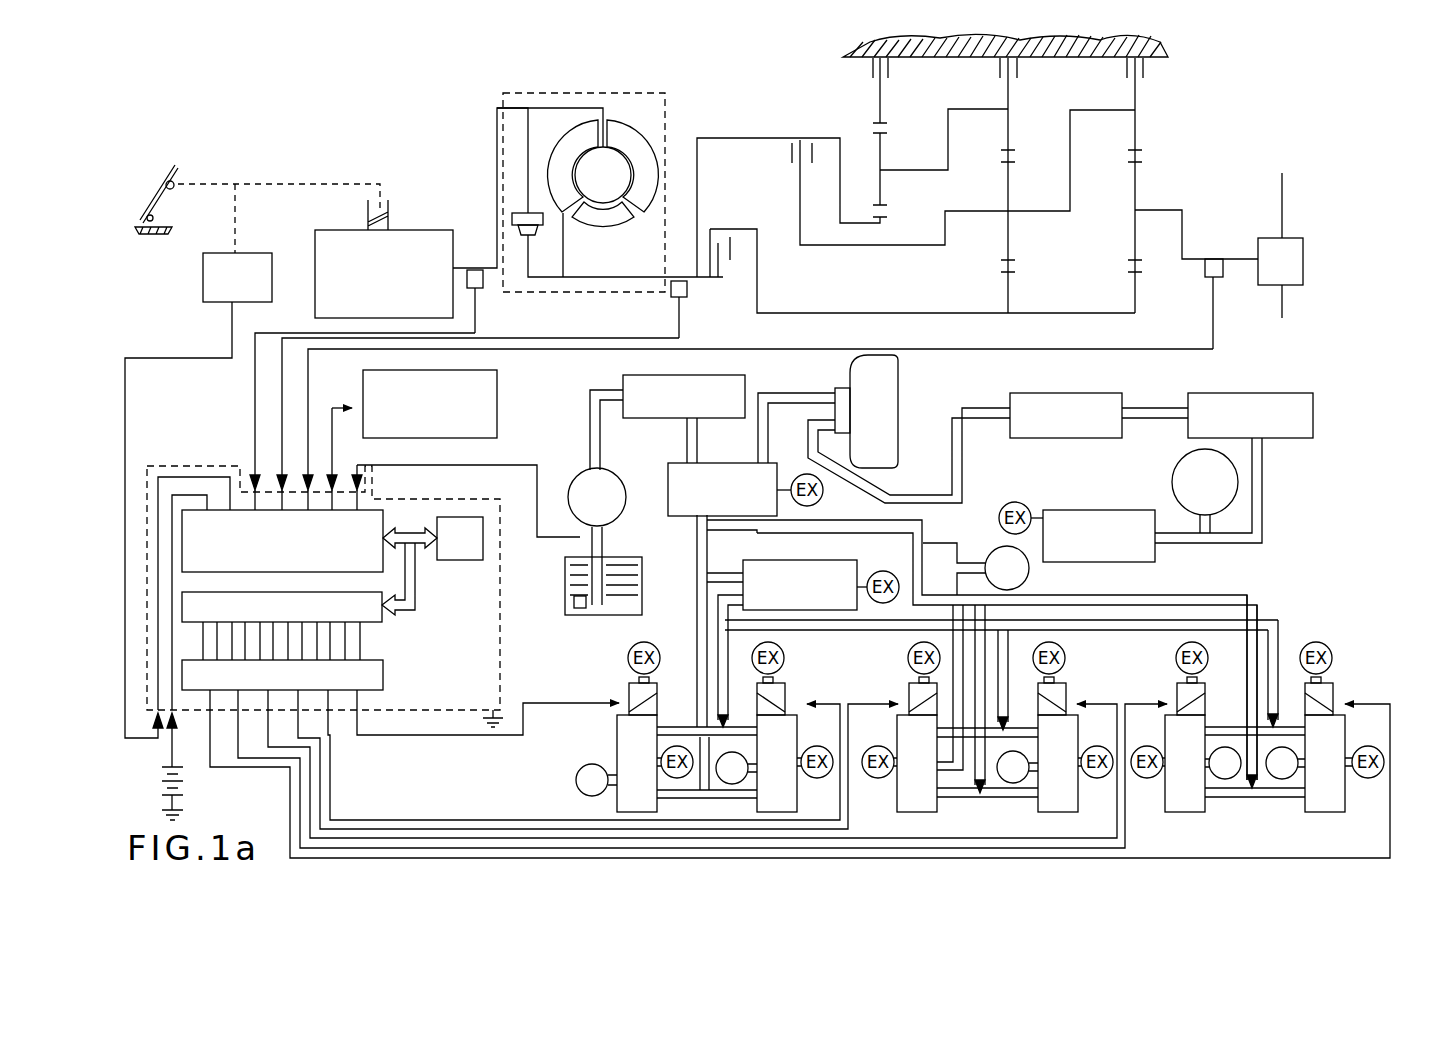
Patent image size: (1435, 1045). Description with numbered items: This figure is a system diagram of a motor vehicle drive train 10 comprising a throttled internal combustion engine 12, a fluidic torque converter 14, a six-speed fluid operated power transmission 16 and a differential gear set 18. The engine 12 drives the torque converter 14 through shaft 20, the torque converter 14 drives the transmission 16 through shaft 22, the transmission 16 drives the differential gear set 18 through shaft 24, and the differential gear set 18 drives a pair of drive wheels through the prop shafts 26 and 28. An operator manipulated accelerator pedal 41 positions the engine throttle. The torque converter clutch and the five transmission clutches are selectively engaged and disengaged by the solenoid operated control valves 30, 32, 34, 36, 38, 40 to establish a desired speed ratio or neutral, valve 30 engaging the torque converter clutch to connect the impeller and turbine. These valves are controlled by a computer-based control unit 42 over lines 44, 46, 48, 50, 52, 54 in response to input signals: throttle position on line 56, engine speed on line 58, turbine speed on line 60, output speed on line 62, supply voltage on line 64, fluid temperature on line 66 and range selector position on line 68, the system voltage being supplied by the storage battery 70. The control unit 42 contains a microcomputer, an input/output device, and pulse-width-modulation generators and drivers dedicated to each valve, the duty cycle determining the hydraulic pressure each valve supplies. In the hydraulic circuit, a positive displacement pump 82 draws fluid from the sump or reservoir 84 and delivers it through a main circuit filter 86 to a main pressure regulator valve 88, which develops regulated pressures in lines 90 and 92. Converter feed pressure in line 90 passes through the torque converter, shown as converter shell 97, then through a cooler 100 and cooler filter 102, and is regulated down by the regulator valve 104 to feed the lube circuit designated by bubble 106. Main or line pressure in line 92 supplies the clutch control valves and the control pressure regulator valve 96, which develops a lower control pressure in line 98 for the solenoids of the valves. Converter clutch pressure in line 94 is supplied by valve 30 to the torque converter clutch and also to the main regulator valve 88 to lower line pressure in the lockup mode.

The motor vehicle drive train 10 is at (418, 148).
The throttled internal combustion engine 12 is at (418, 237).
The fluidic torque converter 14 is at (522, 92).
The six-speed fluid operated power transmission 16 is at (780, 118).
The differential gear set 18 is at (1265, 273).
The shaft 20 is at (497, 250).
The shaft 22 is at (690, 298).
The shaft 24 is at (1182, 230).
The prop shaft 26 is at (1282, 197).
The prop shaft 28 is at (1283, 314).
The solenoid operated control valve 30 is at (897, 747).
The solenoid operated control valve 32 is at (628, 753).
The solenoid operated control valve 34 is at (800, 737).
The solenoid operated control valve 36 is at (1067, 788).
The solenoid operated control valve 38 is at (1183, 808).
The solenoid operated control valve 40 is at (1333, 805).
The accelerator pedal 41 is at (148, 183).
The computer-based control unit 42 is at (507, 600).
The line 44 is at (318, 750).
The line 46 is at (413, 735).
The line 48 is at (440, 813).
The line 50 is at (312, 767).
The line 52 is at (238, 717).
The line 54 is at (288, 817).
The line 56 is at (127, 473).
The line 58 is at (255, 358).
The line 60 is at (282, 410).
The line 62 is at (308, 383).
The line 64 is at (175, 740).
The line 66 is at (495, 463).
The line 68 is at (332, 437).
The storage battery 70 is at (167, 770).
The positive displacement pump 82 is at (620, 493).
The sump or reservoir 84 is at (550, 600).
The main circuit filter 86 is at (667, 380).
The main pressure regulator valve 88 is at (752, 473).
The line 90 is at (785, 395).
The line 92 is at (680, 590).
The line 94 is at (818, 547).
The control pressure regulator valve 96 is at (795, 605).
The converter shell 97 is at (872, 390).
The line 98 is at (720, 670).
The cooler 100 is at (1060, 400).
The cooler filter 102 is at (1302, 410).
The regulator valve 104 is at (1143, 538).
The bubble 106 is at (1197, 463).